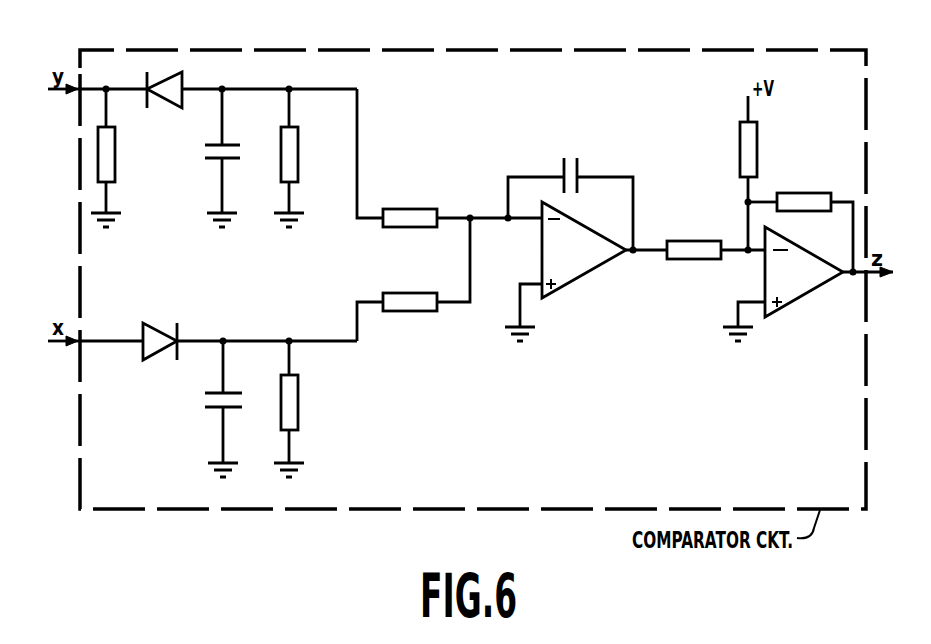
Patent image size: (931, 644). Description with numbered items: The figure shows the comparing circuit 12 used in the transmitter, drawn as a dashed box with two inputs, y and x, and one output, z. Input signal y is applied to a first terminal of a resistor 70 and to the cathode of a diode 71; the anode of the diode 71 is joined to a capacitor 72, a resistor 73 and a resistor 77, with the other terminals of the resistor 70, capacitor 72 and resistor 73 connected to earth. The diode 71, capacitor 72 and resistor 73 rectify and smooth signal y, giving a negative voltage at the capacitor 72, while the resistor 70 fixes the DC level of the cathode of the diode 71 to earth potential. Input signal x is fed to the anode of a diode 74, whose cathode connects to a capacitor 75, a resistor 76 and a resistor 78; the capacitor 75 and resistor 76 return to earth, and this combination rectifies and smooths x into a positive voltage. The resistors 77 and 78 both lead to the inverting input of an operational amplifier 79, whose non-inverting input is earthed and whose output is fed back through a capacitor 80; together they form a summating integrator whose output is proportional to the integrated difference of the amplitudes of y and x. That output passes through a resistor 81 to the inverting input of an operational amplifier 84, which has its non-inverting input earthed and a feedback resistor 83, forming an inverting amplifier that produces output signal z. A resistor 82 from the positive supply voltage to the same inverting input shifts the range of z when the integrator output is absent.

The comparing circuit 12 is at (253, 45).
The resistor 70 is at (104, 162).
The diode 71 is at (146, 86).
The capacitor 72 is at (227, 160).
The resistor 73 is at (287, 162).
The diode 74 is at (178, 336).
The capacitor 75 is at (218, 410).
The resistor 76 is at (287, 410).
The resistor 77 is at (405, 208).
The resistor 78 is at (405, 292).
The operational amplifier 79 is at (586, 266).
The capacitor 80 is at (579, 170).
The resistor 81 is at (700, 240).
The resistor 82 is at (746, 158).
The resistor 83 is at (808, 193).
The operational amplifier 84 is at (800, 288).